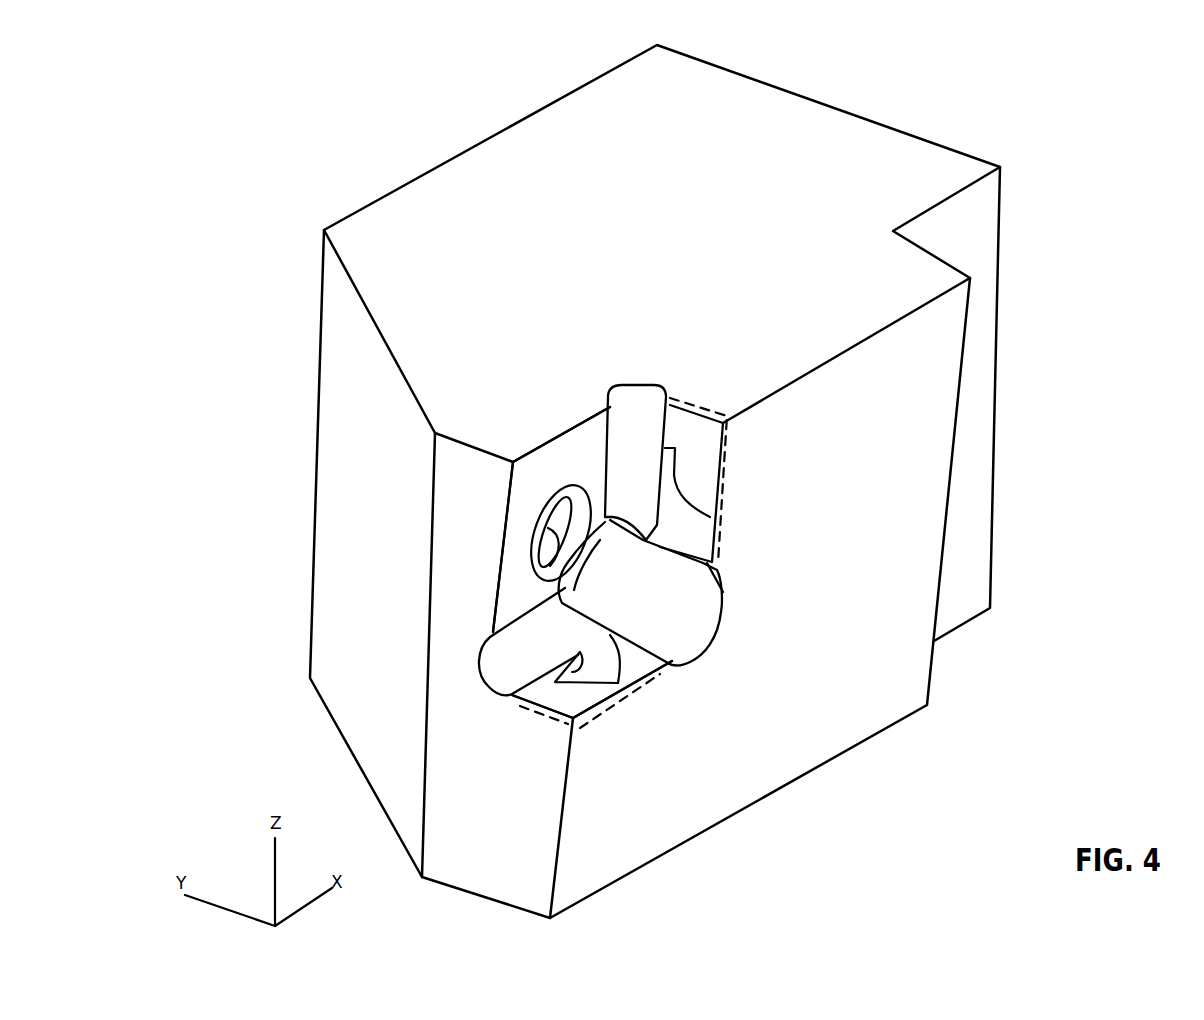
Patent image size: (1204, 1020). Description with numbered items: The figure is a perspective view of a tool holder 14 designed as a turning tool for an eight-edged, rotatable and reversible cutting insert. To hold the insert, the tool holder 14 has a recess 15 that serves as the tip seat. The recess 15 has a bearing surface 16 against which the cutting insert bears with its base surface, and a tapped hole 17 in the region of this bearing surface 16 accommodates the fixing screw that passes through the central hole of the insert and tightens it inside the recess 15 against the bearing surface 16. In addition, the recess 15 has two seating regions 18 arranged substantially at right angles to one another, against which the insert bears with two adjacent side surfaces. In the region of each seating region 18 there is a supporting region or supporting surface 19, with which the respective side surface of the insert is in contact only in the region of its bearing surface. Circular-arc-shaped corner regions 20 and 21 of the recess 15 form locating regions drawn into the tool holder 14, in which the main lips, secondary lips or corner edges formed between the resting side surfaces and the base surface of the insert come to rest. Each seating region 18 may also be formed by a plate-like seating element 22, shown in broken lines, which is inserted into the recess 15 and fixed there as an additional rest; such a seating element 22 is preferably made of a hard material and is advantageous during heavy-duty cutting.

The tool holder 14 is at (979, 408).
The recess 15 is at (722, 660).
The bearing surface 16 is at (562, 456).
The tapped hole 17 is at (537, 573).
The seating region 18 is at (703, 452).
The supporting surface 19 is at (690, 533).
The corner region 20 is at (638, 404).
The corner region 21 is at (698, 623).
The seating element 22 is at (698, 407).